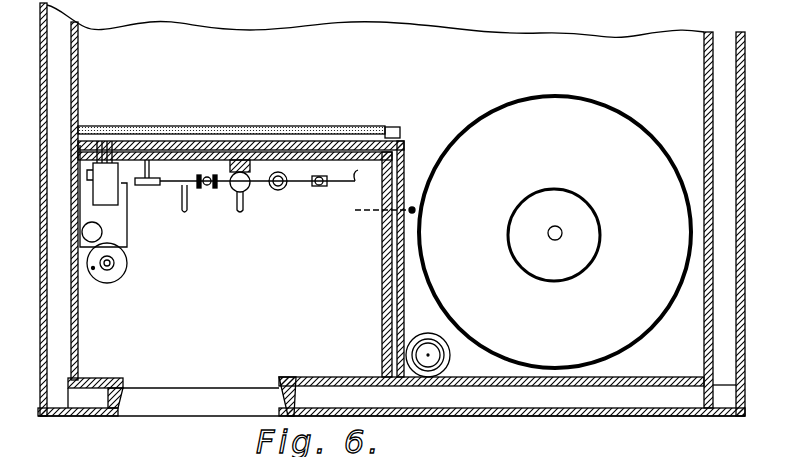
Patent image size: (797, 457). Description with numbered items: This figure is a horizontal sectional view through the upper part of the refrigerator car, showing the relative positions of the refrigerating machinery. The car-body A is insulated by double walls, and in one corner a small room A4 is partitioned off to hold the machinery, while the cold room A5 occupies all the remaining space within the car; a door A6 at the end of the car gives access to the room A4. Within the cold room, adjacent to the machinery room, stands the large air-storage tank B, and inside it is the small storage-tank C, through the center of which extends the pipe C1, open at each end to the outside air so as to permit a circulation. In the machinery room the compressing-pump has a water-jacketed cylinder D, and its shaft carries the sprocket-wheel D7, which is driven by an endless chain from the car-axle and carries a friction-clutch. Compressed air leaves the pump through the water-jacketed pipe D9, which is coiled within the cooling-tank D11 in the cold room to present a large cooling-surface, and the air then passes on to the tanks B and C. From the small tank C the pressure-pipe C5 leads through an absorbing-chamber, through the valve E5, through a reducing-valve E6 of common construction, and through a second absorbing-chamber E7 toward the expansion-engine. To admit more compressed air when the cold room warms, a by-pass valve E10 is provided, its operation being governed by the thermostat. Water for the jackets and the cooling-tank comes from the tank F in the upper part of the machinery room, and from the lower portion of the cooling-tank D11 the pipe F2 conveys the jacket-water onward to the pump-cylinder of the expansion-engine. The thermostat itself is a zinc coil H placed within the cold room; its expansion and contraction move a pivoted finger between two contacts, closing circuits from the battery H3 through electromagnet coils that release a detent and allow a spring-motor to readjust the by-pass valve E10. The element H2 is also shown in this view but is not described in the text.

The car-body A is at (391, 209).
The small room A4 is at (236, 215).
The cold room A5 is at (597, 220).
The door A6 is at (434, 396).
The large air-storage tank B is at (648, 215).
The small storage-tank C is at (554, 235).
The pipe C1 is at (553, 240).
The pressure-pipe C5 is at (253, 186).
The water-jacketed cylinder D is at (121, 263).
The sprocket-wheel D7 is at (427, 340).
The pipe D9 is at (107, 268).
The cooling-tank D11 is at (450, 356).
The valve E5 is at (322, 193).
The reducing-valve E6 is at (282, 192).
The second absorbing-chamber E7 is at (248, 186).
The by-pass valve E10 is at (208, 192).
The tank F is at (385, 211).
The pipe F2 is at (360, 231).
The zinc coil H is at (400, 128).
The box H2 is at (103, 194).
The battery H3 is at (102, 229).